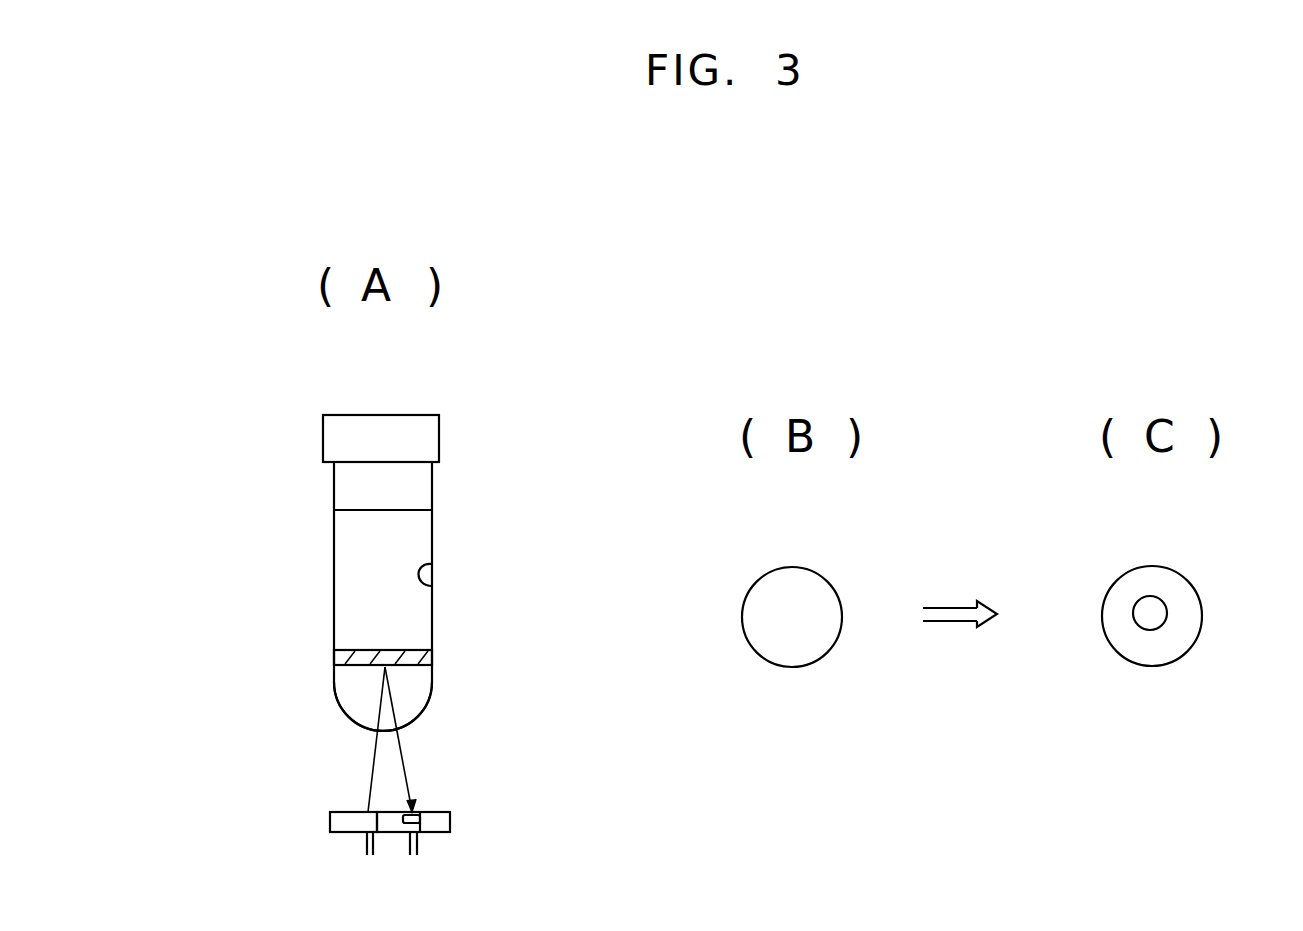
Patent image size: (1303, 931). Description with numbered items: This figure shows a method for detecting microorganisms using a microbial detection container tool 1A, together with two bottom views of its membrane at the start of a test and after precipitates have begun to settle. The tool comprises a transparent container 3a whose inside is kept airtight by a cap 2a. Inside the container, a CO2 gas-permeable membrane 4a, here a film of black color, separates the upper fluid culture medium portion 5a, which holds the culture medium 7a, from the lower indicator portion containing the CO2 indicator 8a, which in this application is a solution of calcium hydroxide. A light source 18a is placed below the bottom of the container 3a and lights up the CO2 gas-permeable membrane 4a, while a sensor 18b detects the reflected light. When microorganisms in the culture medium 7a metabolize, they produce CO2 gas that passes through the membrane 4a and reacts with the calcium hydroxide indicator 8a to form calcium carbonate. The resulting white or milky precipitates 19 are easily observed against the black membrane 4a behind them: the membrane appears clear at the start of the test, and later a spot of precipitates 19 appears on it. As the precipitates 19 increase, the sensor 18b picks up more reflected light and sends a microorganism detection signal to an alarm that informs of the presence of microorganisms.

The microbial detection container tool 1A is at (747, 536).
The cap 2a is at (341, 423).
The transparent container 3a is at (437, 530).
The CO2 gas-permeable membrane 4a is at (430, 657).
The fluid culture medium portion 5a is at (432, 568).
The culture medium 7a is at (342, 557).
The CO2 indicator 8a is at (420, 690).
The light source 18a is at (367, 815).
The sensor 18b is at (446, 822).
The precipitates 19 is at (1152, 622).